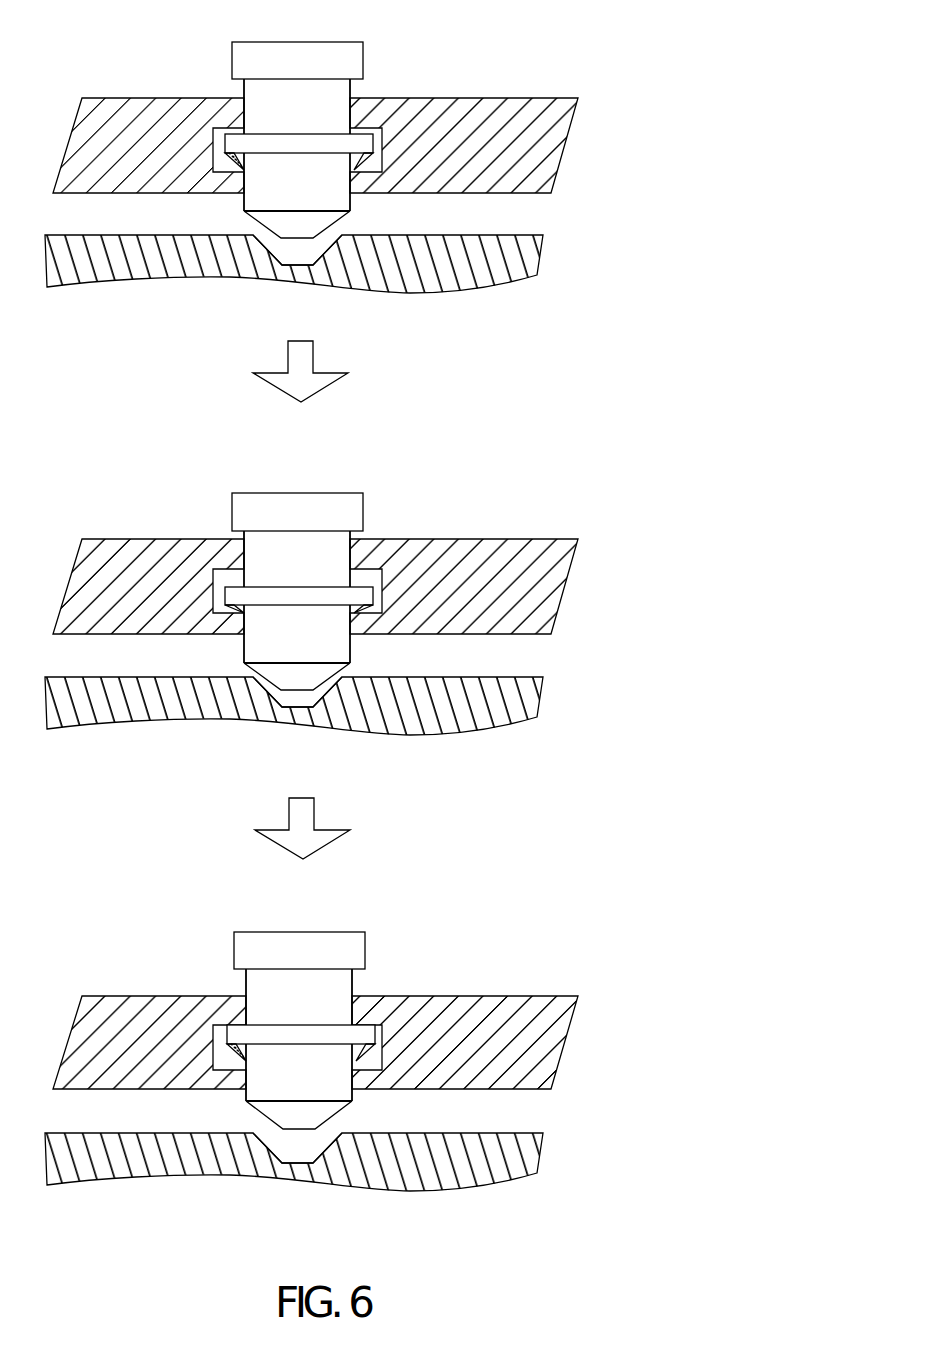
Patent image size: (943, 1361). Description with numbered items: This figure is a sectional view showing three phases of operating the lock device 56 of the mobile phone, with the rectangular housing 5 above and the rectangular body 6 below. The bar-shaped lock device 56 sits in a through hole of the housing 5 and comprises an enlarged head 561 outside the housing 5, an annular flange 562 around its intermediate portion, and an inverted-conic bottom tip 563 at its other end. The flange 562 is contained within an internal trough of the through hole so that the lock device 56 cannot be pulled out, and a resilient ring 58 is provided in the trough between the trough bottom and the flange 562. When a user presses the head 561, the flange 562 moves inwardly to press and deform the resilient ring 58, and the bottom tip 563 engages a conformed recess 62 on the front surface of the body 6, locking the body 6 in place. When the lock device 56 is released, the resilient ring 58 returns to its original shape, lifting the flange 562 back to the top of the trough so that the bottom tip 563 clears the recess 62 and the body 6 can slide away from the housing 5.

The housing 5 is at (530, 115).
The body 6 is at (505, 240).
The recess 62 is at (325, 243).
The lock device 56 is at (321, 570).
The enlarged head 561 is at (302, 53).
The annular flange 562 is at (237, 144).
The inverted-conic bottom tip 563 is at (278, 218).
The resilient ring 58 is at (222, 165).